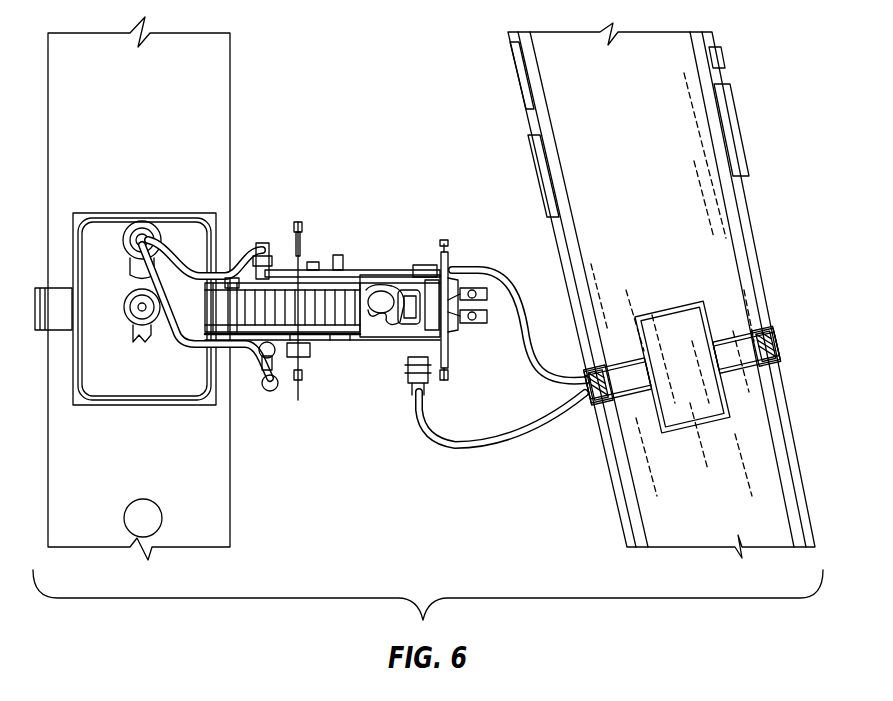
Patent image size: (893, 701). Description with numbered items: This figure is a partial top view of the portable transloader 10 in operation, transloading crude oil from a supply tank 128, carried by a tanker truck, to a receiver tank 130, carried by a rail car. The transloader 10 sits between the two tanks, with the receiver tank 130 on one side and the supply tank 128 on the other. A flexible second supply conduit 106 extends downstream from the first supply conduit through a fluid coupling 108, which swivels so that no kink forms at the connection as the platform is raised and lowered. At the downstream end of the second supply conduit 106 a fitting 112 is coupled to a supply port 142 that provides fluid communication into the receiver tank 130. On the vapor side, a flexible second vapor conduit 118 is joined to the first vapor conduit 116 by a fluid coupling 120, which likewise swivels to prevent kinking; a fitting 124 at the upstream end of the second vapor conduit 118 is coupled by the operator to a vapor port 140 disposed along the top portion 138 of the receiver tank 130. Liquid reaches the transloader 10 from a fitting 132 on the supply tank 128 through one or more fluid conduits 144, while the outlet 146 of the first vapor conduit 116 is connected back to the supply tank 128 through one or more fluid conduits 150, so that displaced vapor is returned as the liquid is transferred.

The transloader 10 is at (387, 218).
The second supply conduit 106 is at (176, 333).
The fluid coupling 108 is at (280, 363).
The fitting 112 is at (133, 249).
The first vapor conduit 116 is at (400, 267).
The second vapor conduit 118 is at (245, 253).
The fluid coupling 120 is at (295, 242).
The fitting 124 is at (147, 247).
The supply tank 128 is at (727, 233).
The receiver tank 130 is at (82, 180).
The fitting 132 is at (590, 403).
The top portion 138 is at (123, 355).
The vapor port 140 is at (142, 235).
The supply port 142 is at (95, 238).
The fluid conduits 144 is at (467, 447).
The outlet 146 is at (450, 270).
The fluid conduits 150 is at (503, 267).